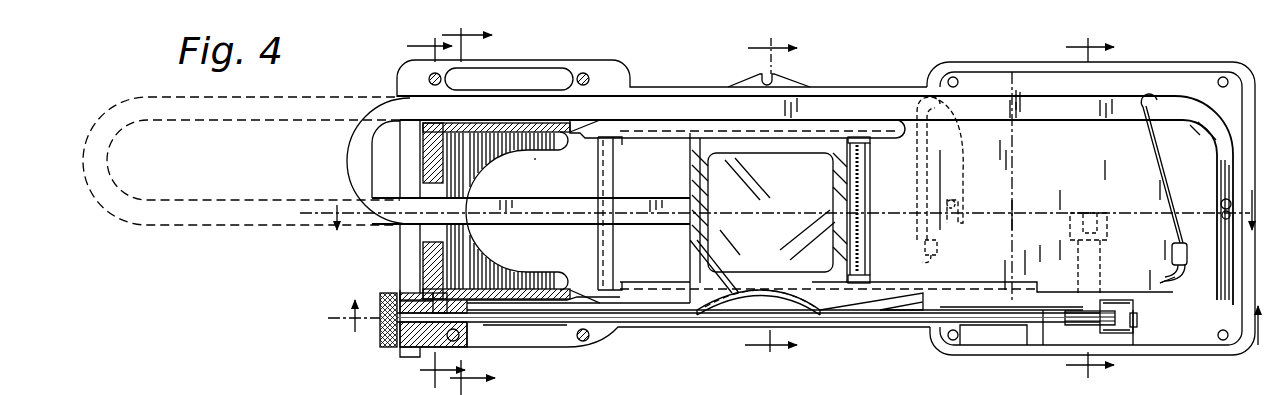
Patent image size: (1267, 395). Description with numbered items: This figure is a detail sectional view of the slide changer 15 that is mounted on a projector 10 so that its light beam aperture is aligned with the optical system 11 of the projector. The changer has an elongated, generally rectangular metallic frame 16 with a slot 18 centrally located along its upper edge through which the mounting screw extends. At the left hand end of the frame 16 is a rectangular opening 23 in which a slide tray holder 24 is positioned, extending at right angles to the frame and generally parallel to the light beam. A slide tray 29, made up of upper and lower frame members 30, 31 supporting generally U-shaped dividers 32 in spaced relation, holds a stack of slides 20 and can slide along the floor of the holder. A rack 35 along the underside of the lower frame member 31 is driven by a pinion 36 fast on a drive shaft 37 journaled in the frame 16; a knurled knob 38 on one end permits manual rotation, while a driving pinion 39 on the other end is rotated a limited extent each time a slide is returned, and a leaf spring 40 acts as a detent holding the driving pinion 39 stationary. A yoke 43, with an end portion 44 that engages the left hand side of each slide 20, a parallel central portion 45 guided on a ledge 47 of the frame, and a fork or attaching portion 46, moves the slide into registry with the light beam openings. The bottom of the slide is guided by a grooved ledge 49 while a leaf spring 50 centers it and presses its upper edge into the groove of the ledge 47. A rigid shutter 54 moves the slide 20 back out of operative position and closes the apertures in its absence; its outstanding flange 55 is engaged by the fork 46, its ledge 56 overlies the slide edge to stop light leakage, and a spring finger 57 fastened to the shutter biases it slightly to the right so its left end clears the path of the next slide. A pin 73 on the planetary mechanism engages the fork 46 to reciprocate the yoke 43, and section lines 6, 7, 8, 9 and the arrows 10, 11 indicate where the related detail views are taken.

The section line 6— 6 is at (436, 207).
The section line 7— 7 is at (468, 204).
The section line 8— 8 is at (1090, 207).
The section line 9— 9 is at (771, 195).
The projector 10 is at (792, 331).
The optical system 11 is at (783, 202).
The slide changer 15 is at (385, 76).
The frame 16 is at (853, 70).
The slot 18 is at (778, 78).
The slide 20 is at (694, 249).
The rectangular opening 23 is at (582, 134).
The slide tray holder 24 is at (509, 298).
The slide tray 29 is at (533, 157).
The upper frame member 30 is at (436, 153).
The lower frame member 31 is at (430, 262).
The U-shaped dividers 32 is at (482, 272).
The rack 35 is at (425, 287).
The pinion 36 is at (405, 349).
The drive shaft 37 is at (646, 323).
The knurled knob 38 is at (382, 343).
The driving pinion 39 is at (1086, 335).
The leaf spring 40 is at (1100, 262).
The yoke 43 is at (157, 226).
The end portion 44 is at (650, 219).
The central portion 45 is at (815, 199).
The fork or attaching portion 46 is at (965, 158).
The ledge 47 is at (673, 132).
The grooved ledge 49 is at (690, 305).
The leaf spring 50 is at (814, 307).
The shutter 54 is at (986, 255).
The outstanding flange 55 is at (1185, 270).
The ledge 56 is at (862, 243).
The spring finger 57 is at (918, 188).
The pin 73 is at (968, 200).